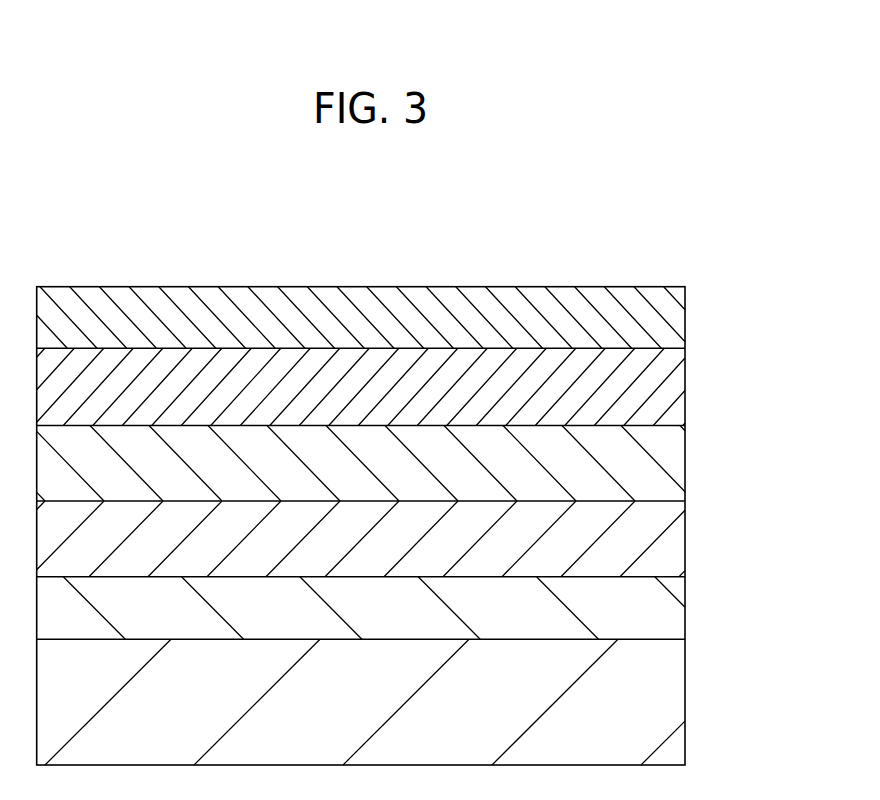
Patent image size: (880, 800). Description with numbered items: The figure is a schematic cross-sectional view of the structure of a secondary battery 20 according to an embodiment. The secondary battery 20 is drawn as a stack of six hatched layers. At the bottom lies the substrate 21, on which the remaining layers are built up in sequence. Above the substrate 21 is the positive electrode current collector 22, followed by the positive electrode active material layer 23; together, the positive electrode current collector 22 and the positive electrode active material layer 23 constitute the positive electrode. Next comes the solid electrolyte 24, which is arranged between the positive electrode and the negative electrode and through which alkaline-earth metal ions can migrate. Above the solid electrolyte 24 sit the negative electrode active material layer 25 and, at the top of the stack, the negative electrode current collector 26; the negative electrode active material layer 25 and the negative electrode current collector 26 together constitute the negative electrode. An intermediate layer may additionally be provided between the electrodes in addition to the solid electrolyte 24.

The secondary battery 20 is at (645, 244).
The substrate 21 is at (665, 700).
The positive electrode current collector 22 is at (665, 610).
The positive electrode active material layer 23 is at (665, 543).
The solid electrolyte 24 is at (665, 468).
The negative electrode active material layer 25 is at (665, 391).
The negative electrode current collector 26 is at (665, 317).